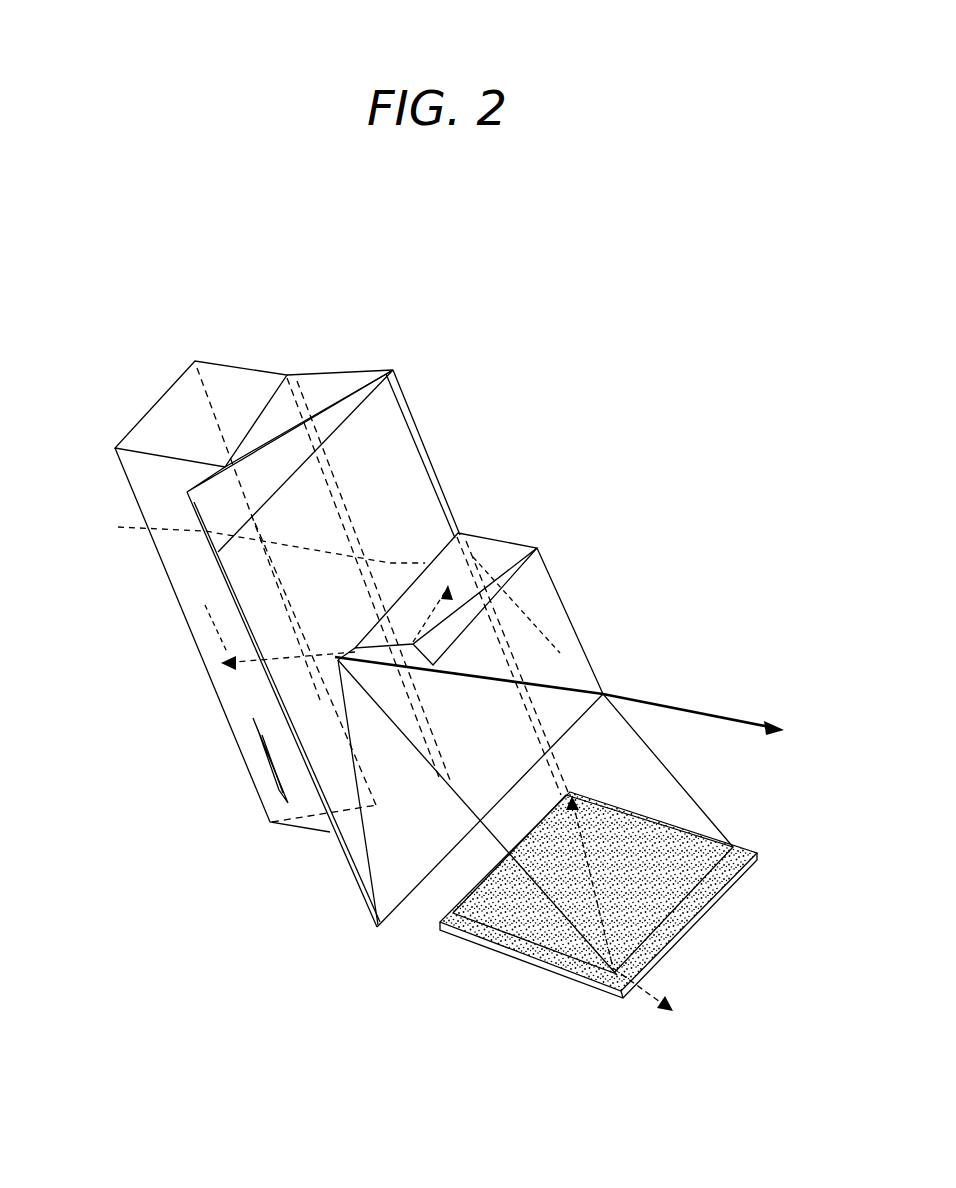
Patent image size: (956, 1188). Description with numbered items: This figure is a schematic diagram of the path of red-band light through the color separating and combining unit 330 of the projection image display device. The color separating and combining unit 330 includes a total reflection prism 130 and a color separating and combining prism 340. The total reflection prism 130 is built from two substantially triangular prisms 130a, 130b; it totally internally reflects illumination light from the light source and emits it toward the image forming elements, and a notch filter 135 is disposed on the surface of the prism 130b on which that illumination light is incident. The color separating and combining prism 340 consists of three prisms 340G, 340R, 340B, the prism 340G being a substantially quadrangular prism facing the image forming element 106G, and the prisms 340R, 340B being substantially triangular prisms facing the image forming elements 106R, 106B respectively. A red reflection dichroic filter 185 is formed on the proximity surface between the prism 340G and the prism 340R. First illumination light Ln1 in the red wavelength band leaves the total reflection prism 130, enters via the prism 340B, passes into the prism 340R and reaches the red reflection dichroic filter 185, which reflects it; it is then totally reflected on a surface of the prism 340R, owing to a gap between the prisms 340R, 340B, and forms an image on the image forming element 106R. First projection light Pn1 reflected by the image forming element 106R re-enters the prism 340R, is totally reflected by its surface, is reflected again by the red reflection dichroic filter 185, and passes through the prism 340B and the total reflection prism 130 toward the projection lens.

The color separating and combining prism 340 is at (175, 315).
The prism 340G is at (176, 411).
The prism 340R is at (347, 373).
The prism 340B is at (412, 417).
The red reflection dichroic filter 185 is at (270, 377).
The color separating and combining unit 330 is at (546, 356).
The total reflection prism 130 is at (415, 928).
The prism 130a is at (541, 585).
The prism 130b is at (667, 803).
The notch filter 135 is at (725, 878).
The image forming element 106R is at (233, 538).
The image forming element 106G is at (215, 630).
The image forming element 106B is at (270, 773).
The first projection light Pn1 is at (698, 712).
The first illumination light Ln1 is at (577, 983).